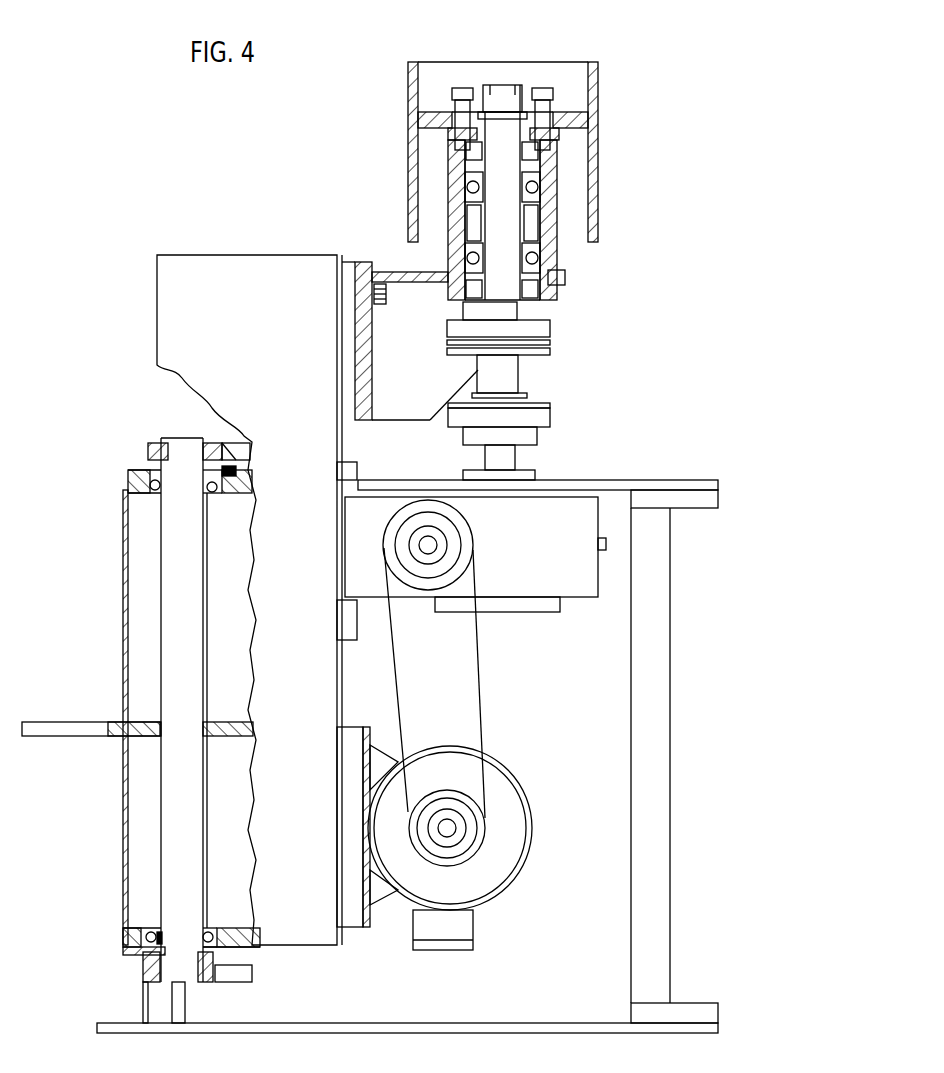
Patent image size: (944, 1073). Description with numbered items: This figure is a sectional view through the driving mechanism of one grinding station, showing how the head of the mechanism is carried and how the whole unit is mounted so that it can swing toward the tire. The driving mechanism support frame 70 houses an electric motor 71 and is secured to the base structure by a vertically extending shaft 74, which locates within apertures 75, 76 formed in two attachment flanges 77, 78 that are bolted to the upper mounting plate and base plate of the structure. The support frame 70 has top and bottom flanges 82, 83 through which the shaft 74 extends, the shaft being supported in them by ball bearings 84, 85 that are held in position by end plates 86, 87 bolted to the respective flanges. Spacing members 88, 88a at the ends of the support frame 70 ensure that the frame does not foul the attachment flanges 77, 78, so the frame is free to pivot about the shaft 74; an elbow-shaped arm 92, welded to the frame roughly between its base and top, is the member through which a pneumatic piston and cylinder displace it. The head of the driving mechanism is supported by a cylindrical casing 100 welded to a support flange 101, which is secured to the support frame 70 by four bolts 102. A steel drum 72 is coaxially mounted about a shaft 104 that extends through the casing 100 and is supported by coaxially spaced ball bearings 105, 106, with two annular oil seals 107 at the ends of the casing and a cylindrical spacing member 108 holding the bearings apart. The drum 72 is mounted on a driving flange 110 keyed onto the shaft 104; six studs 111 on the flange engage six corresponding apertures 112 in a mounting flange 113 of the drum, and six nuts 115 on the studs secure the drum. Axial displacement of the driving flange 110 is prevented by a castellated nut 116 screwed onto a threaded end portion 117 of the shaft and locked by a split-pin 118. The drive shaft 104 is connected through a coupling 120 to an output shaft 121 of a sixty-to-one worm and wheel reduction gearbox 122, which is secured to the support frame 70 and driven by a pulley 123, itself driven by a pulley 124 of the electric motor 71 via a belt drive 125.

The support frame 70 is at (128, 838).
The electric motor 71 is at (495, 880).
The steel drum 72 is at (592, 140).
The vertically extending shaft 74 is at (190, 975).
The aperture 75 is at (178, 945).
The aperture 76 is at (170, 445).
The attachment flange 77 is at (668, 490).
The attachment flange 78 is at (240, 975).
The top flange 82 is at (245, 485).
The bottom flange 83 is at (245, 930).
The ball bearing 84 is at (210, 930).
The ball bearing 85 is at (215, 490).
The end plate 86 is at (220, 950).
The end plate 87 is at (138, 478).
The spacing member 88 is at (225, 447).
The spacing member 88a is at (157, 930).
The elbow-shaped arm 92 is at (38, 722).
The cylindrical casing 100 is at (452, 210).
The support flange 101 is at (405, 420).
The bolts 102 is at (385, 305).
The shaft 104 is at (503, 85).
The ball bearing 105 is at (545, 172).
The ball bearing 106 is at (540, 258).
The annular oil seals 107 is at (545, 150).
The cylindrical spacing member 108 is at (545, 212).
The driving flange 110 is at (455, 130).
The studs 111 is at (460, 100).
The apertures 112 is at (560, 115).
The mounting flange 113 is at (572, 118).
The nuts 115 is at (548, 105).
The castellated nut 116 is at (510, 80).
The threaded end portion 117 is at (520, 95).
The split-pin 118 is at (500, 86).
The coupling 120 is at (548, 420).
The output shaft 121 is at (508, 462).
The worm and wheel reduction gearbox 122 is at (590, 598).
The pulley 123 is at (462, 548).
The pulley 124 is at (485, 828).
The belt drive 125 is at (487, 705).